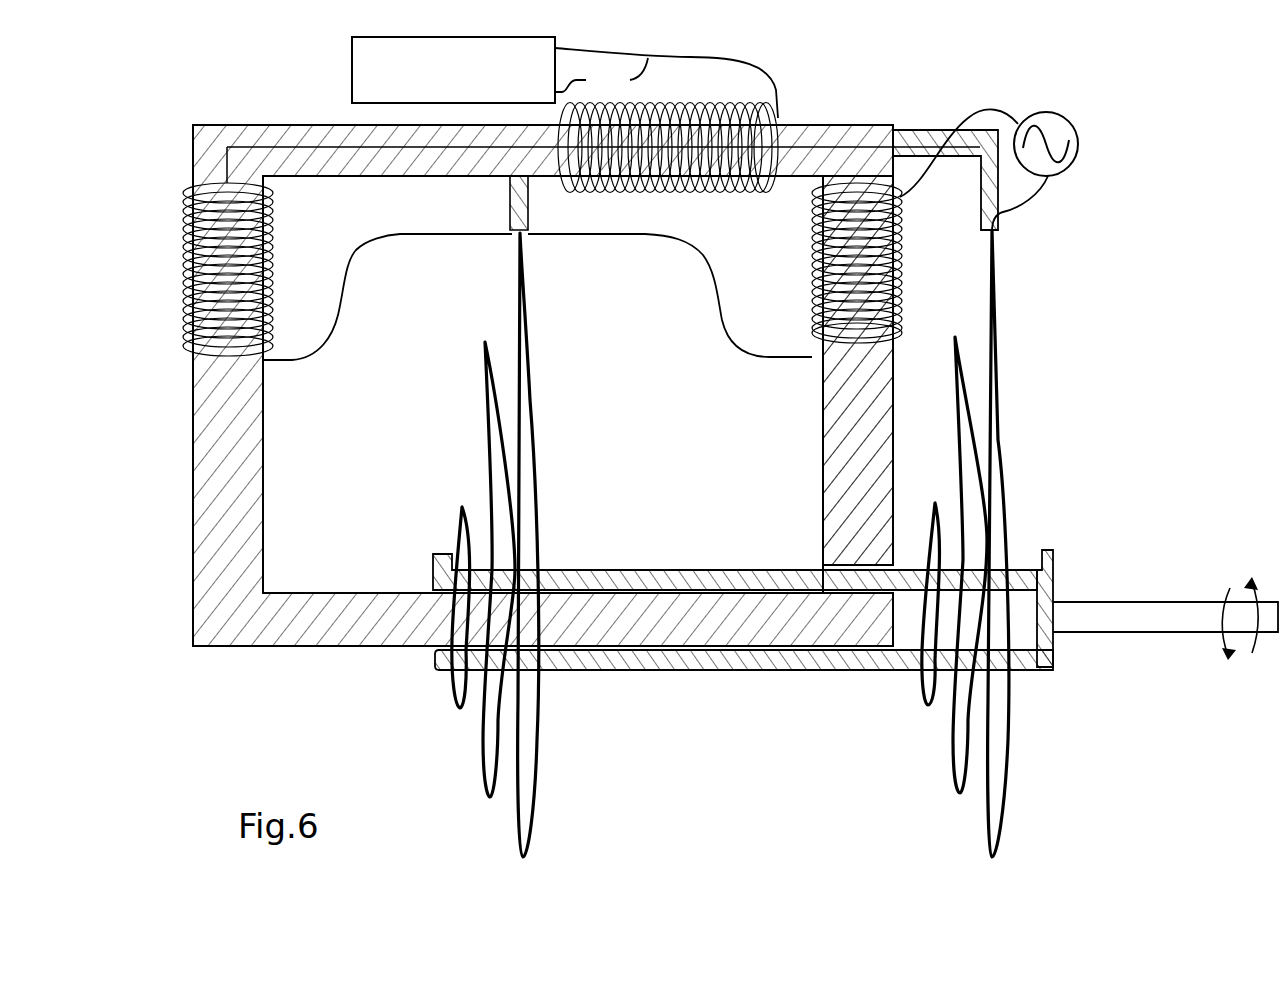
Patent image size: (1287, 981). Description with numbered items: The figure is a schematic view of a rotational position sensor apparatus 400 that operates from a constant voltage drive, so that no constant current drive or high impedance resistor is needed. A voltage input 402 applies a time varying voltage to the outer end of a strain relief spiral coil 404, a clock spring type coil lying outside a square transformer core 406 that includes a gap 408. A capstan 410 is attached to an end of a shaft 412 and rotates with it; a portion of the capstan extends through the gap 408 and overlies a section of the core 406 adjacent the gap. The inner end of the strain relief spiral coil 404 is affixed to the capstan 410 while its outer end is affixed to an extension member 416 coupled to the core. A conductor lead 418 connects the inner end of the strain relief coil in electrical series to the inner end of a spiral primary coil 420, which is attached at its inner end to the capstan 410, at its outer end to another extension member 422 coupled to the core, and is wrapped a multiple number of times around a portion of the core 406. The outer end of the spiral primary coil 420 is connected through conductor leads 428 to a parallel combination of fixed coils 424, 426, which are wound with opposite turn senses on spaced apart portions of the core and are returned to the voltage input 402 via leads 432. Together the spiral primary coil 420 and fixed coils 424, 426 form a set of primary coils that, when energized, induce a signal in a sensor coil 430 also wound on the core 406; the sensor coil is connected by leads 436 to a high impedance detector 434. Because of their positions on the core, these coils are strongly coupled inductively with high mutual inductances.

The sensor apparatus 400 is at (258, 731).
The voltage input 402 is at (1047, 112).
The strain relief spiral coil 404 is at (922, 700).
The transformer core 406 is at (210, 585).
The gap 408 is at (812, 565).
The capstan 410 is at (718, 668).
The shaft 412 is at (1145, 625).
The extension member 416 is at (980, 192).
The conductor lead 418 is at (712, 568).
The spiral primary coil 420 is at (455, 700).
The extension member 422 is at (515, 205).
The fixed coil 424 is at (182, 322).
The fixed coil 426 is at (812, 286).
The conductor leads 428 is at (478, 236).
The sensor coil 430 is at (748, 100).
The leads 432 is at (920, 187).
The high impedance detector 434 is at (374, 73).
The leads 436 is at (666, 83).